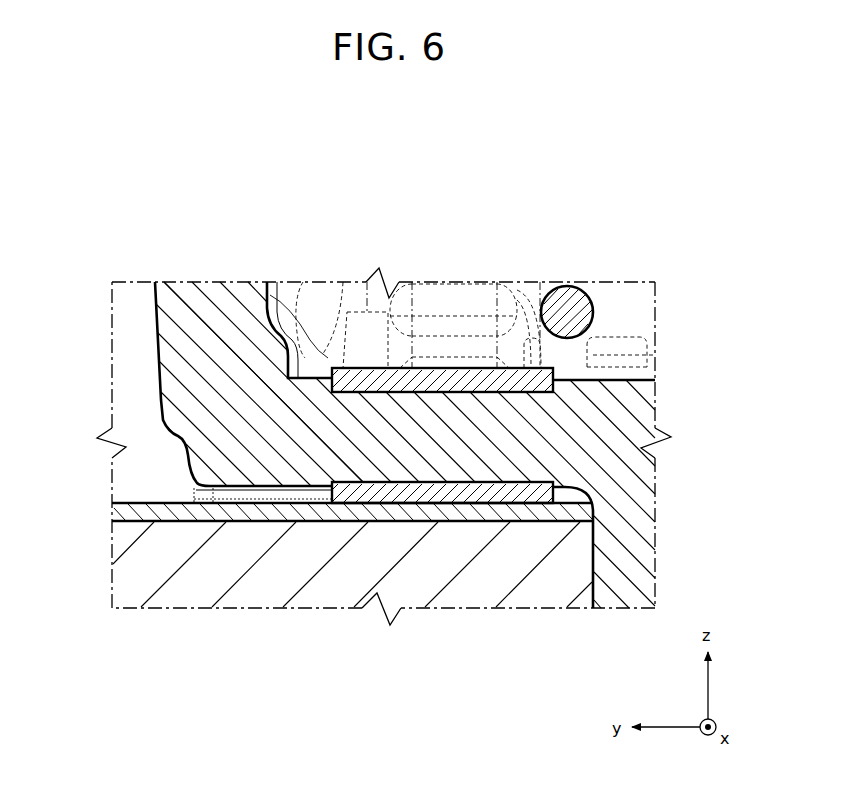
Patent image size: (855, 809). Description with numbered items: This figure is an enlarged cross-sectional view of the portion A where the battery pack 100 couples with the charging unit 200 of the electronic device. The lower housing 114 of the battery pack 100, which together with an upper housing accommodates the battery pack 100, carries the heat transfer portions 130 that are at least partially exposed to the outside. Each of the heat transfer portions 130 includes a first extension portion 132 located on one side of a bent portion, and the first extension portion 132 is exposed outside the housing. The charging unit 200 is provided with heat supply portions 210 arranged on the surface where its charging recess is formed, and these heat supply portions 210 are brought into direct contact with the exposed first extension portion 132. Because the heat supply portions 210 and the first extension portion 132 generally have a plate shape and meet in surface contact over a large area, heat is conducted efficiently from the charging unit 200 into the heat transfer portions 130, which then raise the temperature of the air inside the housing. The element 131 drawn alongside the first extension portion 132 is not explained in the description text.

The camera module 100 is at (150, 327).
The housing wall 114 is at (213, 296).
The connector assembly 130 is at (555, 422).
The first connector 131 is at (525, 487).
The second connector 132 is at (547, 371).
The substrate 200 is at (258, 601).
The adhesive layer 210 is at (213, 512).
The region A is at (580, 282).